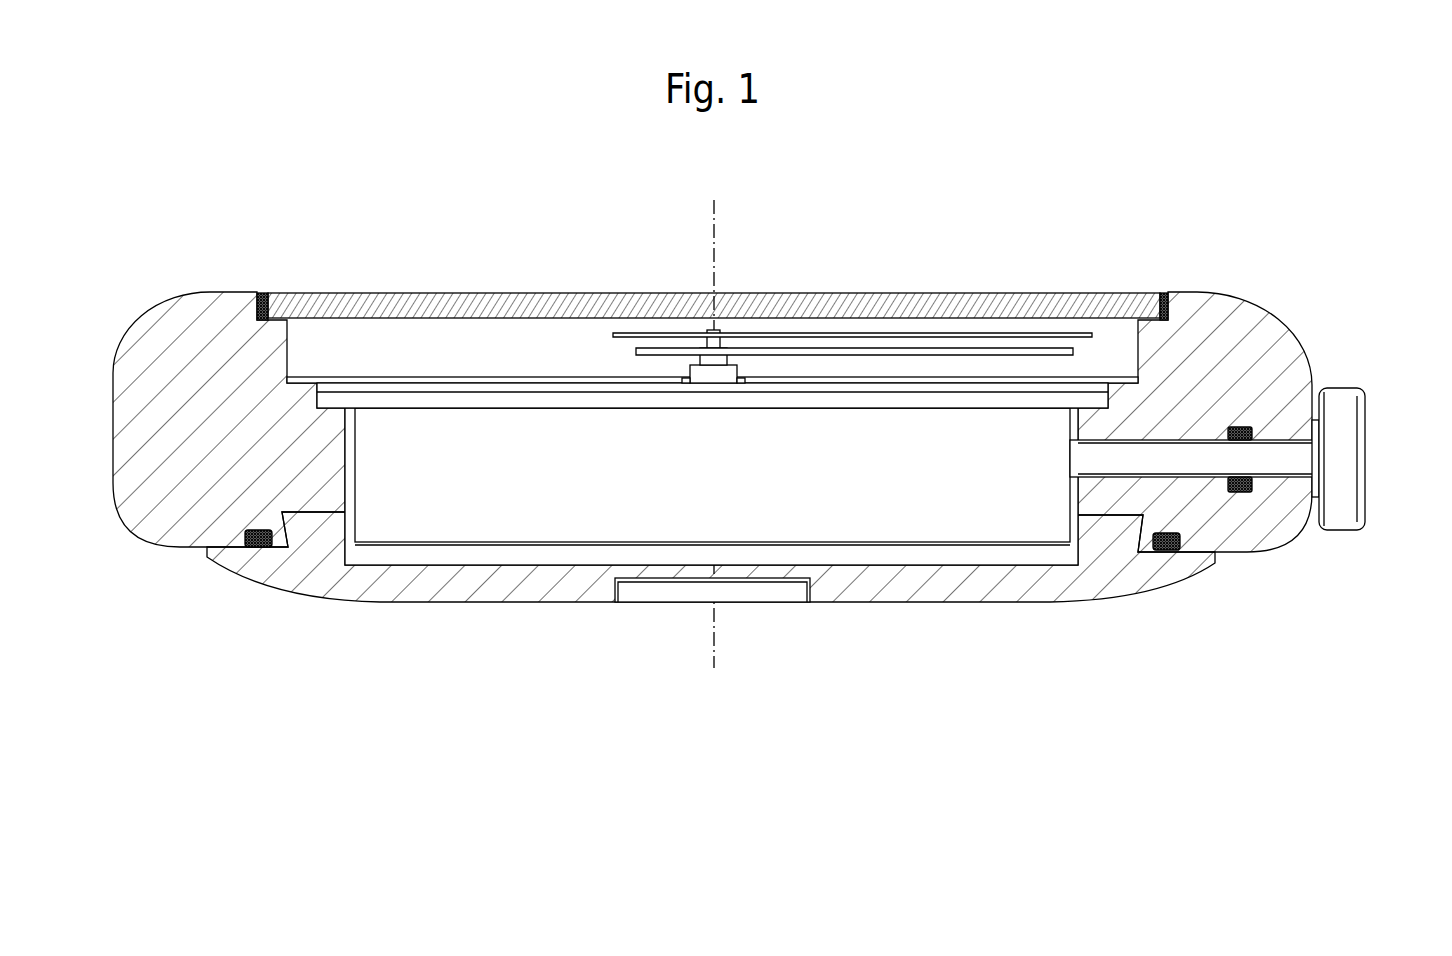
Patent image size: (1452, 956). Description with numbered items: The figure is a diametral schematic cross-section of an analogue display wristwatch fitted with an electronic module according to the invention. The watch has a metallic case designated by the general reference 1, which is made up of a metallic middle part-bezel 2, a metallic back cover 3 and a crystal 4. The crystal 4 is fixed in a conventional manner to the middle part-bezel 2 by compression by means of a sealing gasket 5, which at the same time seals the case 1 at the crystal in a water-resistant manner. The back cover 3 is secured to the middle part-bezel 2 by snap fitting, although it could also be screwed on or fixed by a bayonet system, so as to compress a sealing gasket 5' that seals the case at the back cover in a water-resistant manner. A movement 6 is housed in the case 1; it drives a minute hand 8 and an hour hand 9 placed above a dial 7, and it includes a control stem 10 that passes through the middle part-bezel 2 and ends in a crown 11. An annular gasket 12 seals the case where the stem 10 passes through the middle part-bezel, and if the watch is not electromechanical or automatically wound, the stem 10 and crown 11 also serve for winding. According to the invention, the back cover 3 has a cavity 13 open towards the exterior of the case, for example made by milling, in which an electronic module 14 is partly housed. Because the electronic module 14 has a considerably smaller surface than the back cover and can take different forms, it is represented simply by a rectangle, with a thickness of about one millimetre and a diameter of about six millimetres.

The case 1 is at (1330, 328).
The middle part-bezel 2 is at (150, 352).
The back cover 3 is at (998, 593).
The crystal 4 is at (877, 305).
The sealing gasket 5 is at (712, 279).
The sealing gasket 5' is at (713, 596).
The movement 6 is at (885, 535).
The dial 7 is at (387, 378).
The minute hand 8 is at (933, 337).
The hour hand 9 is at (822, 352).
The control stem 10 is at (1283, 467).
The crown 11 is at (1347, 458).
The annular gasket 12 is at (1247, 425).
The cavity 13 is at (617, 590).
The electronic module 14 is at (747, 597).